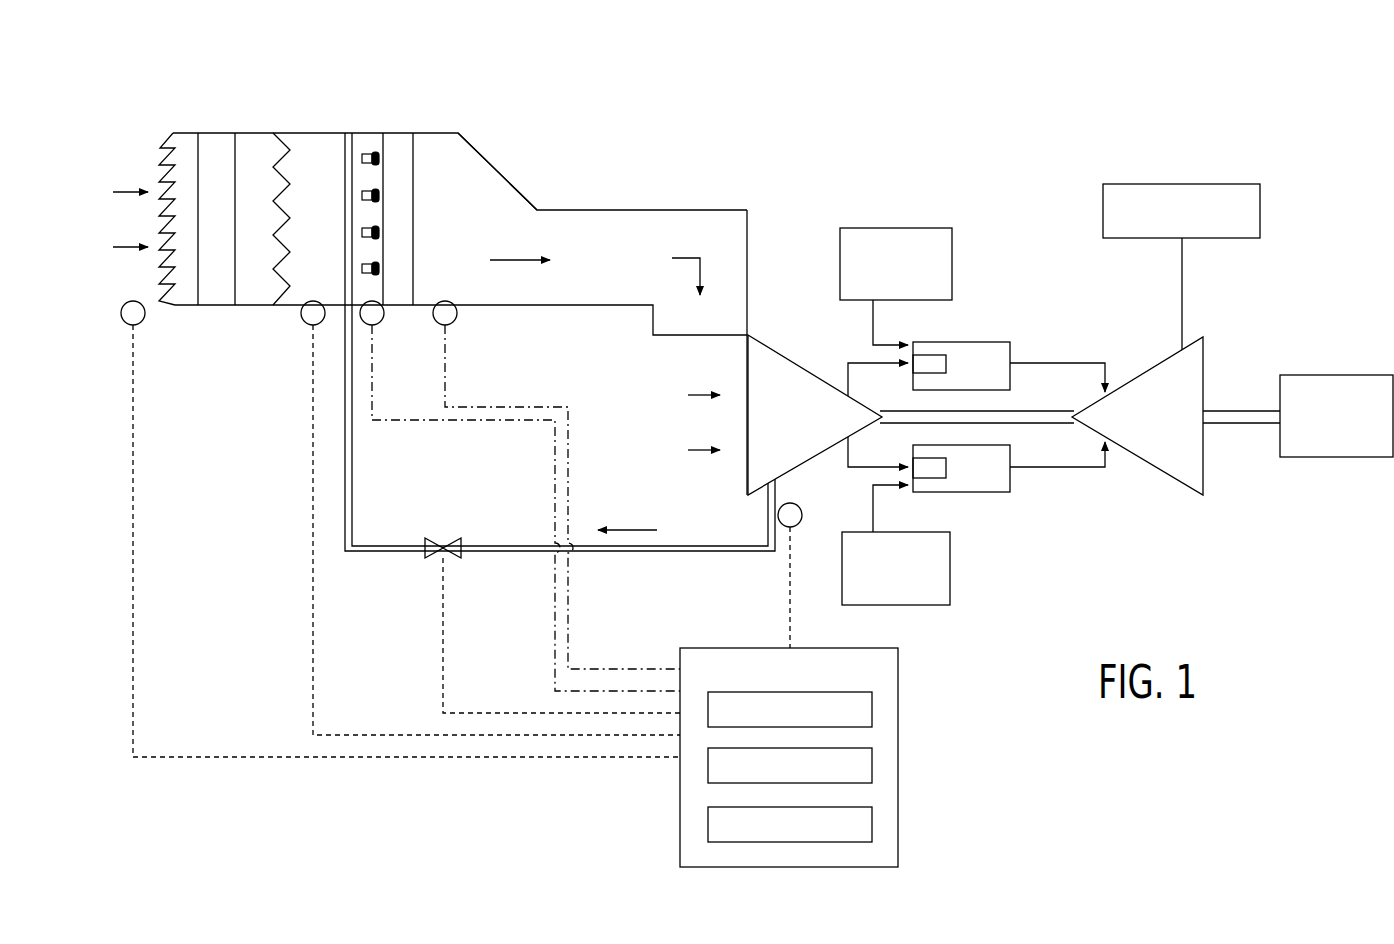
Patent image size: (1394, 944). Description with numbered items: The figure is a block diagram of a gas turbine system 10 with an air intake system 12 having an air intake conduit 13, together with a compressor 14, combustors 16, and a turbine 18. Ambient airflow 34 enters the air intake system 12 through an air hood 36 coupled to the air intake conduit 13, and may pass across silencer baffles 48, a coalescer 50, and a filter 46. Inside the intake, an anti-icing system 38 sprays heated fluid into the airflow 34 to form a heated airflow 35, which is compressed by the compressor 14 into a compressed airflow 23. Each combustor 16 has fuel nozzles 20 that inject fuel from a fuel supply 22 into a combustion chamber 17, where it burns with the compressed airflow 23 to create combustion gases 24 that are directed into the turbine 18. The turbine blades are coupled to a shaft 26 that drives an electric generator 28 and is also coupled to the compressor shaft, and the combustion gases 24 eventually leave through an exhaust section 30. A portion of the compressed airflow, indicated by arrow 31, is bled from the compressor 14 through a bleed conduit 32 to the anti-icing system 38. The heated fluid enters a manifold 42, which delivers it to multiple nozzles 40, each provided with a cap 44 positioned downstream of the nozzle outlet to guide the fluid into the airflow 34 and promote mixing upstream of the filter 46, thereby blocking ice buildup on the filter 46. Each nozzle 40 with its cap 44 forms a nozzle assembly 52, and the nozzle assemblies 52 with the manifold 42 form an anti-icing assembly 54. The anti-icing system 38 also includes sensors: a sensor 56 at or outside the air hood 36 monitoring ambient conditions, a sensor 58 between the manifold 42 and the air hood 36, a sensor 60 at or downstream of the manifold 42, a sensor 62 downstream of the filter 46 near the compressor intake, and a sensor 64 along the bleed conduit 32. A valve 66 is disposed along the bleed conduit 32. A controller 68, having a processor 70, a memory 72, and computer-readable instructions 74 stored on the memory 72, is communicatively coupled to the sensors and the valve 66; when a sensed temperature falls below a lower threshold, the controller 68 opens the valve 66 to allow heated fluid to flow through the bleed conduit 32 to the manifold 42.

The gas turbine system 10 is at (157, 82).
The air intake system 12 is at (520, 97).
The air intake conduit 13 is at (503, 176).
The compressor 14 is at (769, 347).
The combustor 16 is at (968, 341).
The combustion chamber 17 is at (979, 417).
The turbine 18 is at (1170, 483).
The fuel nozzle 20 is at (937, 354).
The fuel supply 22 is at (897, 228).
The compressed airflow 23 is at (850, 360).
The combustion gases 24 is at (1060, 362).
The shaft 26 is at (1028, 409).
The electric generator 28 is at (1340, 375).
The exhaust section 30 is at (1181, 184).
The arrow indicating heated fluid flow 31 is at (633, 525).
The bleed conduit 32 is at (740, 554).
The airflow 34 is at (122, 196).
The heated airflow 35 is at (520, 258).
The air hood 36 is at (165, 134).
The anti-icing system 38 is at (391, 772).
The nozzle 40 is at (378, 158).
The manifold 42 is at (345, 187).
The cap 44 is at (378, 172).
The filter 46 is at (404, 134).
The silencer baffles 48 is at (216, 152).
The coalescer 50 is at (280, 140).
The nozzle assembly 52 is at (390, 208).
The anti-icing assembly 54 is at (350, 108).
The sensor 56 is at (147, 325).
The sensor 58 is at (299, 323).
The sensor 60 is at (386, 324).
The sensor 62 is at (458, 324).
The sensor 64 is at (802, 528).
The valve 66 is at (455, 560).
The controller 68 is at (899, 673).
The processor 70 is at (873, 712).
The memory 72 is at (873, 769).
The computer-readable instructions 74 is at (873, 827).